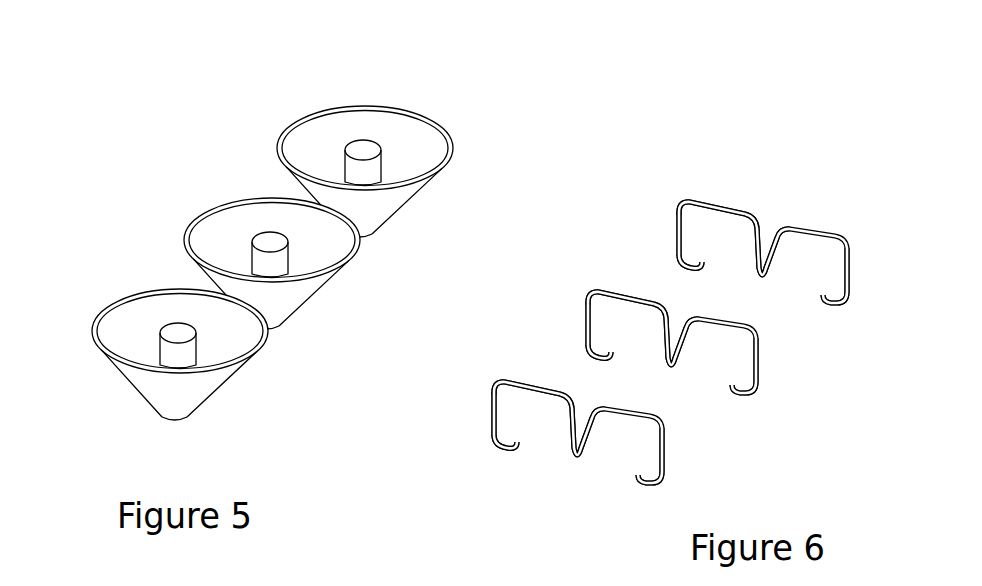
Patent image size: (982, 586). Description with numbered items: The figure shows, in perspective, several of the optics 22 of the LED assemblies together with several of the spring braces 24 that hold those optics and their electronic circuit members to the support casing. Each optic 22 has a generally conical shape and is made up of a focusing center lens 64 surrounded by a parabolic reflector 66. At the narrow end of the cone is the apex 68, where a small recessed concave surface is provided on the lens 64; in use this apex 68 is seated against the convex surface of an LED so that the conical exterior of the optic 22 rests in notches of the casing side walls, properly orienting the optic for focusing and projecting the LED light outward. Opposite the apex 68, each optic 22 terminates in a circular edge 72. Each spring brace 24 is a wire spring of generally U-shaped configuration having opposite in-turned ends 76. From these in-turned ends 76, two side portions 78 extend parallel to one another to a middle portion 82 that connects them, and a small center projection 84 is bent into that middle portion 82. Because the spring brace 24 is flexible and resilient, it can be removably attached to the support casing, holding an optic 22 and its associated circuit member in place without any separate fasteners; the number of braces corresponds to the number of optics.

In FIG. 5, the optic 22 is at (302, 118).
In FIG. 5, the focusing center lens 64 is at (360, 146).
In FIG. 5, the parabolic reflector 66 is at (385, 203).
In FIG. 5, the apex 68 is at (362, 238).
In FIG. 5, the circular edge 72 is at (445, 128).
In FIG. 6, the spring brace 24 is at (675, 222).
In FIG. 6, the in-turned ends 76 is at (700, 266).
In FIG. 6, the side portions 78 is at (675, 252).
In FIG. 6, the middle portion 82 is at (713, 203).
In FIG. 6, the center projection 84 is at (760, 240).